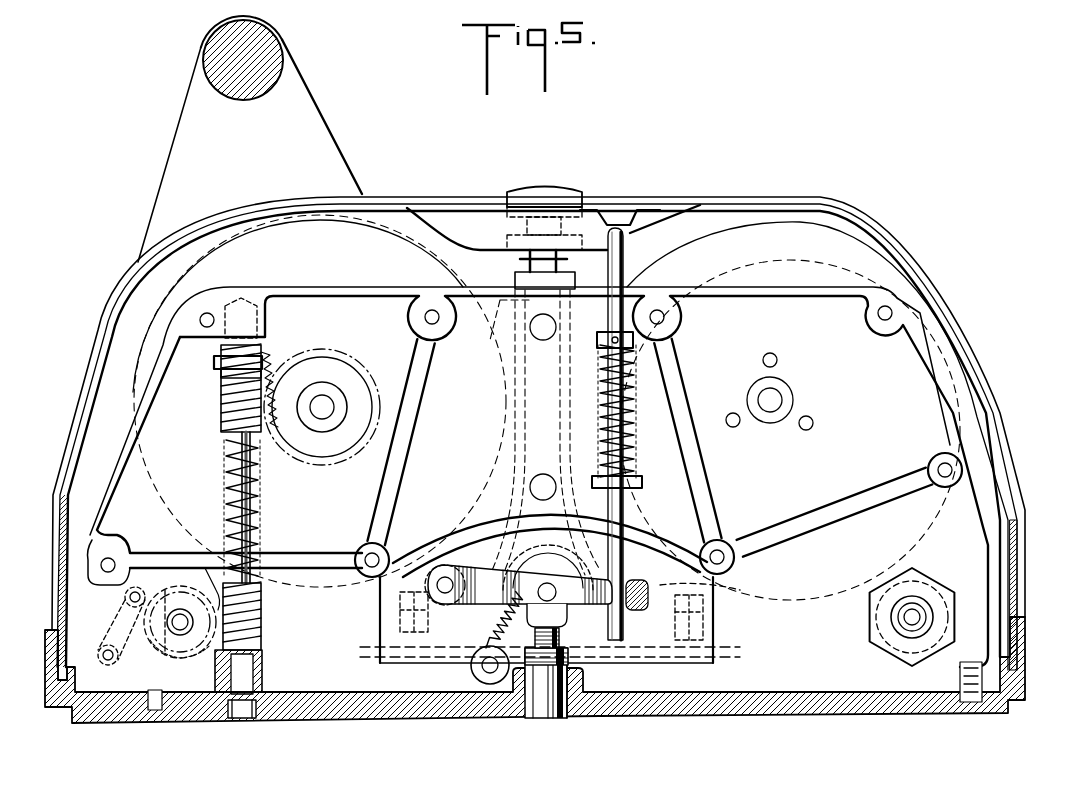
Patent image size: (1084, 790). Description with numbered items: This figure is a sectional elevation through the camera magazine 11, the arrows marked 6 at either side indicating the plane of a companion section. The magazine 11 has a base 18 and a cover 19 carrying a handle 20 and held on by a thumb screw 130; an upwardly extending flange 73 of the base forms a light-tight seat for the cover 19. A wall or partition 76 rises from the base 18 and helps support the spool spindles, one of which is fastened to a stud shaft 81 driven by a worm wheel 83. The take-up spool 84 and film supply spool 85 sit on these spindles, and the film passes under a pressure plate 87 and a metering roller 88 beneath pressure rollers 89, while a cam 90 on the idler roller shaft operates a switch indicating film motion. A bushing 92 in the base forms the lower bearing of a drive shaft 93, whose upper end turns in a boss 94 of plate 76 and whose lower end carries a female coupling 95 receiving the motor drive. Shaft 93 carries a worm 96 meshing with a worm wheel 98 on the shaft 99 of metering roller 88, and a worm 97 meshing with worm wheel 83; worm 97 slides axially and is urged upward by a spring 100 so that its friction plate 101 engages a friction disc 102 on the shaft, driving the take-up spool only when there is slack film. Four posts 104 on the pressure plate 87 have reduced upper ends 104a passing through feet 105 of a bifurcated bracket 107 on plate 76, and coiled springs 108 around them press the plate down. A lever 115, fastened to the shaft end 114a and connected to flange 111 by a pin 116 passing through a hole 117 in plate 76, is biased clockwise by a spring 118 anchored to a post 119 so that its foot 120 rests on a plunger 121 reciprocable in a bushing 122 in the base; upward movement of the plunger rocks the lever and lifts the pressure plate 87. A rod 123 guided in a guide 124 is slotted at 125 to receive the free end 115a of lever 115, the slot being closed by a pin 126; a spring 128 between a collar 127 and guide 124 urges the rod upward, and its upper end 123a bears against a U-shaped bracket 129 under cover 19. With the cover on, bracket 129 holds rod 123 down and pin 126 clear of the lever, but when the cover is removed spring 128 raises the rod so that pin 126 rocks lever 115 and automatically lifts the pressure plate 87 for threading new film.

The section line of FIG. 6 is at (1056, 397).
The magazine 11 is at (964, 258).
The base 18 is at (679, 710).
The cover 19 is at (730, 196).
The handle 20 is at (300, 78).
The upwardly extending flange 73 is at (49, 680).
The wall or partition 76 is at (358, 287).
The stud shaft 81 is at (325, 405).
The worm wheel 83 is at (356, 355).
The take-up spool 84 is at (393, 233).
The film supply spool 85 is at (827, 214).
The pressure plate 87 is at (672, 670).
The metering roller 88 is at (165, 588).
The pressure rollers 89 is at (136, 587).
The cam 90 is at (876, 646).
The bushing 92 is at (266, 682).
The drive shaft 93 is at (258, 532).
The boss 94 is at (260, 322).
The female coupling 95 is at (255, 718).
The worm 96 is at (262, 606).
The worm 97 is at (221, 404).
The worm wheel 98 is at (216, 590).
The shaft 99 is at (183, 620).
The spring 100 is at (262, 497).
The friction plate 101 is at (221, 373).
The friction disc 102 is at (214, 360).
The upstanding posts 104 is at (728, 636).
The reduced upper ends of posts 104a is at (728, 616).
The feet 105 is at (728, 588).
The bifurcated bracket 107 is at (515, 414).
The coiled spring 108 is at (430, 622).
The upstanding flange 111 is at (553, 582).
The end of shaft 114a is at (445, 577).
The lever 115 is at (489, 568).
The free end of lever 115a is at (634, 582).
The pin 116 is at (556, 591).
The hole 117 is at (572, 552).
The spring 118 is at (500, 622).
The post 119 is at (485, 661).
The foot 120 is at (570, 645).
The plunger 121 is at (533, 714).
The bushing 122 is at (556, 714).
The rod 123 is at (626, 500).
The upper end of rod 123a is at (650, 236).
The guide 124 is at (632, 477).
The slot 125 is at (642, 531).
The pin 126 is at (567, 608).
The collar 127 is at (635, 340).
The spring 128 is at (634, 428).
The U-shaped bracket 129 is at (624, 210).
The thumb screw 130 is at (544, 189).